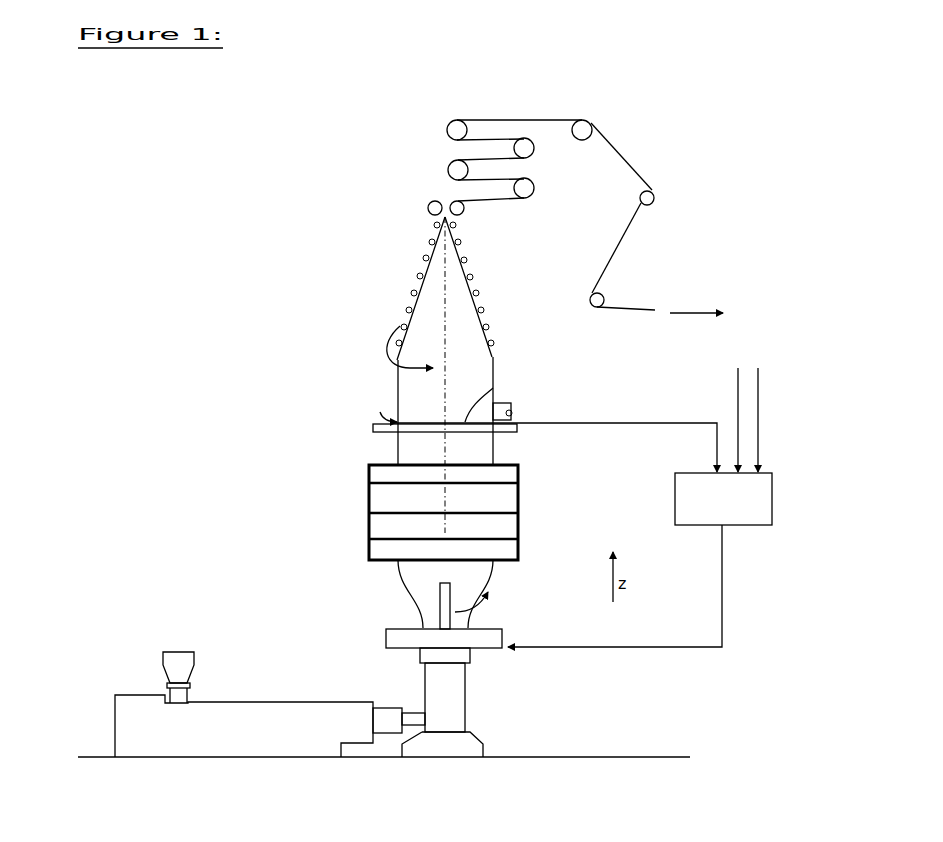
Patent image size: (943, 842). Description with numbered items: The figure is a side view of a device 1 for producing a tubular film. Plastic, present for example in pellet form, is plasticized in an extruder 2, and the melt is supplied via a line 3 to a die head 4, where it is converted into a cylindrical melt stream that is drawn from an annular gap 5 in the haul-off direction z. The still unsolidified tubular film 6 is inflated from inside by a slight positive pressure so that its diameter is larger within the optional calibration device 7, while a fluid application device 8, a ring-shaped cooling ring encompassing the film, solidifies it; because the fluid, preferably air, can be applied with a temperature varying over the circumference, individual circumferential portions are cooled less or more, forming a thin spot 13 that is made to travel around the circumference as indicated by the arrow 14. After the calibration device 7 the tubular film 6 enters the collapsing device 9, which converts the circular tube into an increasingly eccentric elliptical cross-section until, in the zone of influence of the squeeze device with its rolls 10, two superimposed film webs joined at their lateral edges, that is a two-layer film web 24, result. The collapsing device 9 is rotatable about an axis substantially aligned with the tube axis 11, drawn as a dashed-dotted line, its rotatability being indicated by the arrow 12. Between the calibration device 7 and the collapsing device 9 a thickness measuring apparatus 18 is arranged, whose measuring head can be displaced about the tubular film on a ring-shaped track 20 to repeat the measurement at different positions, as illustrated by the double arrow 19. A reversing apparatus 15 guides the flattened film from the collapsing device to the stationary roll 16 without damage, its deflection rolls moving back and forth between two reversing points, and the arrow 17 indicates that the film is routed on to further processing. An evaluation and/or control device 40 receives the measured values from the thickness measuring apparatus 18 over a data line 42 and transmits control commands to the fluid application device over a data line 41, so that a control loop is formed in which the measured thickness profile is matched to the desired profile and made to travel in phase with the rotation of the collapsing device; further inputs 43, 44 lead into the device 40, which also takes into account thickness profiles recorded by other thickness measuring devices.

The device for producing a tubular film 1 is at (330, 318).
The extruder 2 is at (245, 725).
The line 3 is at (412, 715).
The die head 4 is at (452, 716).
The annular gap 5 is at (468, 628).
The tubular film 6 is at (488, 590).
The calibration device 7 is at (520, 527).
The fluid application device 8 is at (506, 645).
The collapsing device 9 is at (482, 282).
The godet rollers 10 is at (426, 205).
The tube axis 11 is at (448, 368).
The arrow 12 is at (392, 345).
The thin spot 13 is at (460, 574).
The arrow 14 is at (475, 608).
The reversing apparatus 15 is at (445, 143).
The stationary roll 16 is at (592, 122).
The arrow 17 is at (690, 313).
The thickness measuring apparatus 18 is at (511, 408).
The double arrow 19 is at (467, 420).
The track 20 is at (518, 430).
The two-layer film web 24 is at (632, 166).
The evaluation and/or control device 40 is at (733, 509).
The data line 41 is at (630, 648).
The data line 42 is at (635, 423).
The input signal 43 is at (738, 410).
The input signal 44 is at (758, 410).